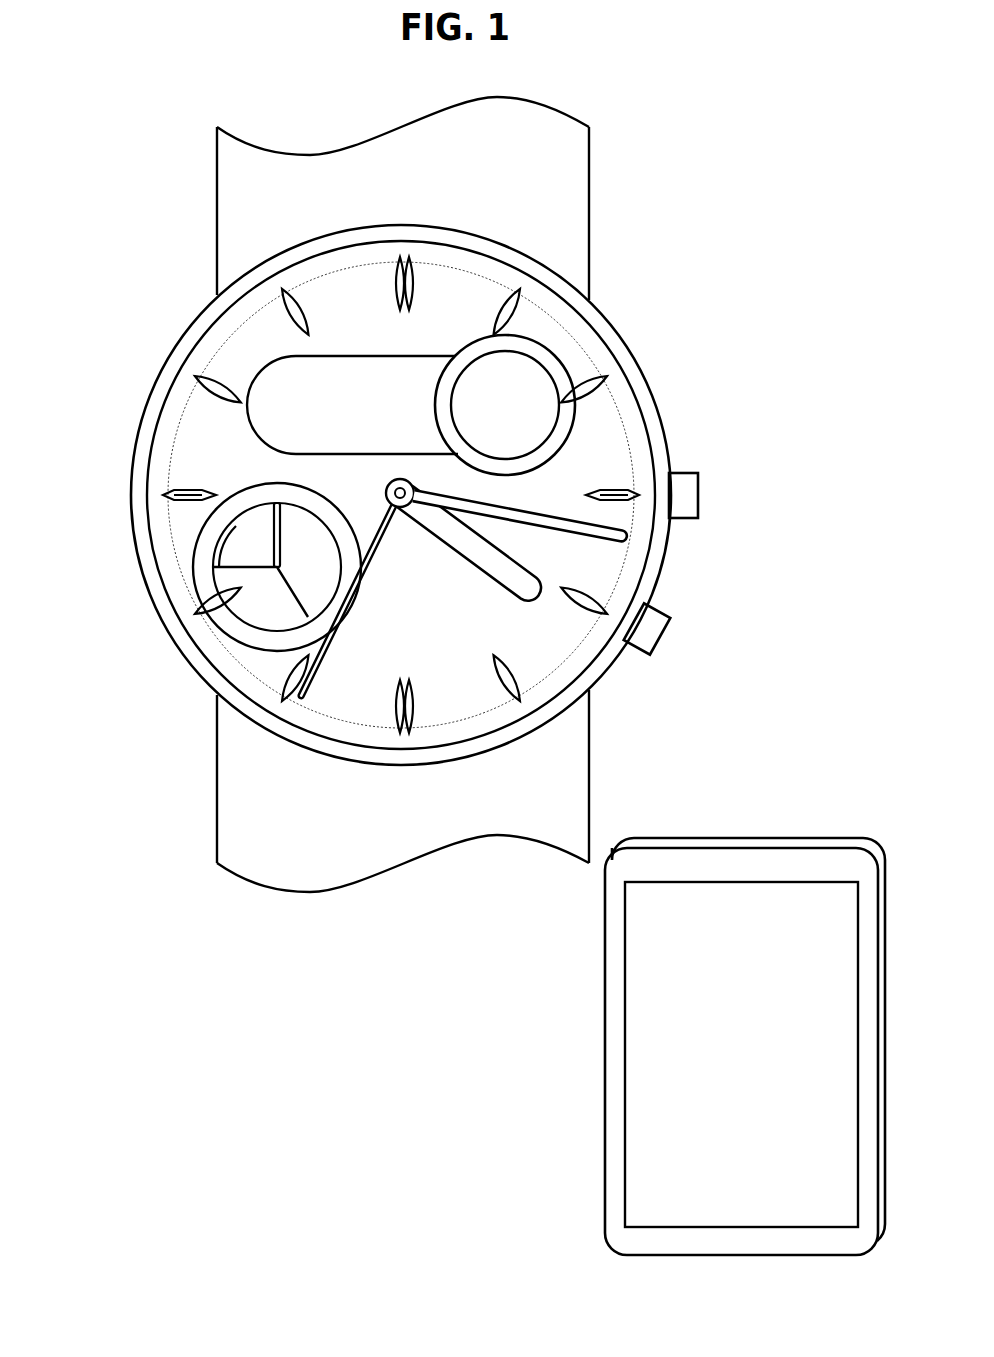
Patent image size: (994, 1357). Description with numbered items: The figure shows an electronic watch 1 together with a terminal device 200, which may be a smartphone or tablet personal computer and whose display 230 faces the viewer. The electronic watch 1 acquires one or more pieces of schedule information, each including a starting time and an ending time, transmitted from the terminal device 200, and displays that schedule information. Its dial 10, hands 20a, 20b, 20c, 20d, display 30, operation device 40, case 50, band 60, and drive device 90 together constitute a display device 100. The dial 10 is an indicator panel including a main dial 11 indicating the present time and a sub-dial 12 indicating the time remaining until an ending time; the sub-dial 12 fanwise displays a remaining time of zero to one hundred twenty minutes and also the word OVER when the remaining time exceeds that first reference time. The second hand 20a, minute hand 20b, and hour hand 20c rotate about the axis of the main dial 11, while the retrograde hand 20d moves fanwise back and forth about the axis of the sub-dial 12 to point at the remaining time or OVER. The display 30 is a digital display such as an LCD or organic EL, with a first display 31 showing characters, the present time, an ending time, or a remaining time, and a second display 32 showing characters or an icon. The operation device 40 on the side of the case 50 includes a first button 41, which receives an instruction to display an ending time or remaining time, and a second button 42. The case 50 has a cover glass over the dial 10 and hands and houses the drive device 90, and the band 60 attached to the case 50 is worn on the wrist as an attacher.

The electronic watch 1 is at (633, 112).
The display device 100 is at (691, 248).
The dial 10 is at (192, 462).
The main dial 11 is at (195, 370).
The sub-dial 12 is at (205, 530).
The second hand 20a is at (300, 703).
The minute hand 20b is at (585, 538).
The hour hand 20c is at (500, 593).
The retrograde hand 20d is at (207, 582).
The display 30 is at (293, 355).
The first display 31 is at (252, 372).
The second display 32 is at (550, 368).
The operation device 40 is at (685, 462).
The first button 41 is at (700, 495).
The second button 42 is at (665, 632).
The case 50 is at (642, 365).
The band 60 is at (217, 165).
The drive device 90 is at (540, 687).
The terminal device 200 is at (832, 792).
The display 230 is at (670, 1073).